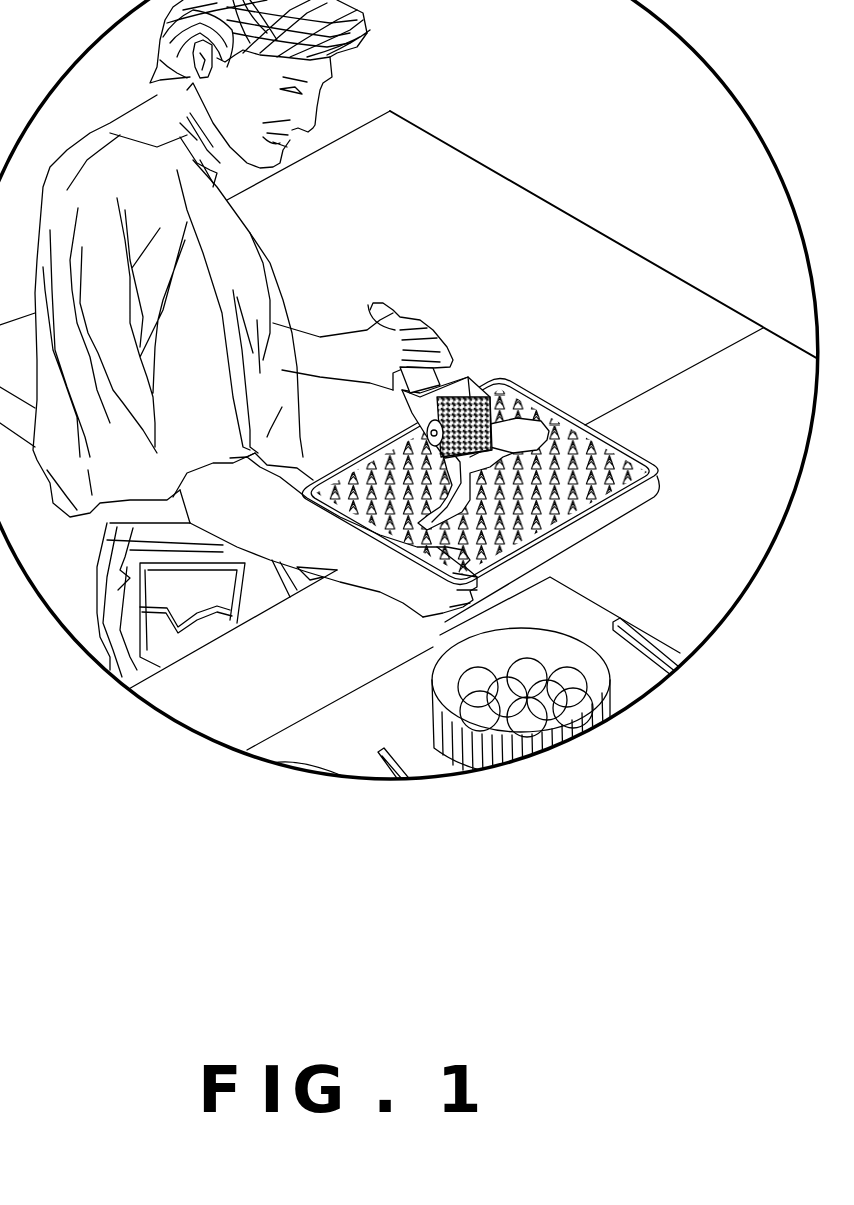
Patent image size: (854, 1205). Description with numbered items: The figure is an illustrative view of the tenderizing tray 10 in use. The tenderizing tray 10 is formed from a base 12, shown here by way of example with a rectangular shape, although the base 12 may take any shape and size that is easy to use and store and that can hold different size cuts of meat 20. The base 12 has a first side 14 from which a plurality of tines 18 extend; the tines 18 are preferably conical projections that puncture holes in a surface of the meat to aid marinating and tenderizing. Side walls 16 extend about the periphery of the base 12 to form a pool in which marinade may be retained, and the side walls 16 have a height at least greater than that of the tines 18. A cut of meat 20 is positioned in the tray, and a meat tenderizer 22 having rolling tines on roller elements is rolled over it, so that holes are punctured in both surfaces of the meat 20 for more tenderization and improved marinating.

The tenderizing tray 10 is at (530, 465).
The base 12 is at (480, 482).
The first side 14 is at (562, 465).
The side walls 16 is at (650, 487).
The tines 18 is at (560, 476).
The cut of meat 20 is at (430, 345).
The meat tenderizer 22 is at (380, 312).